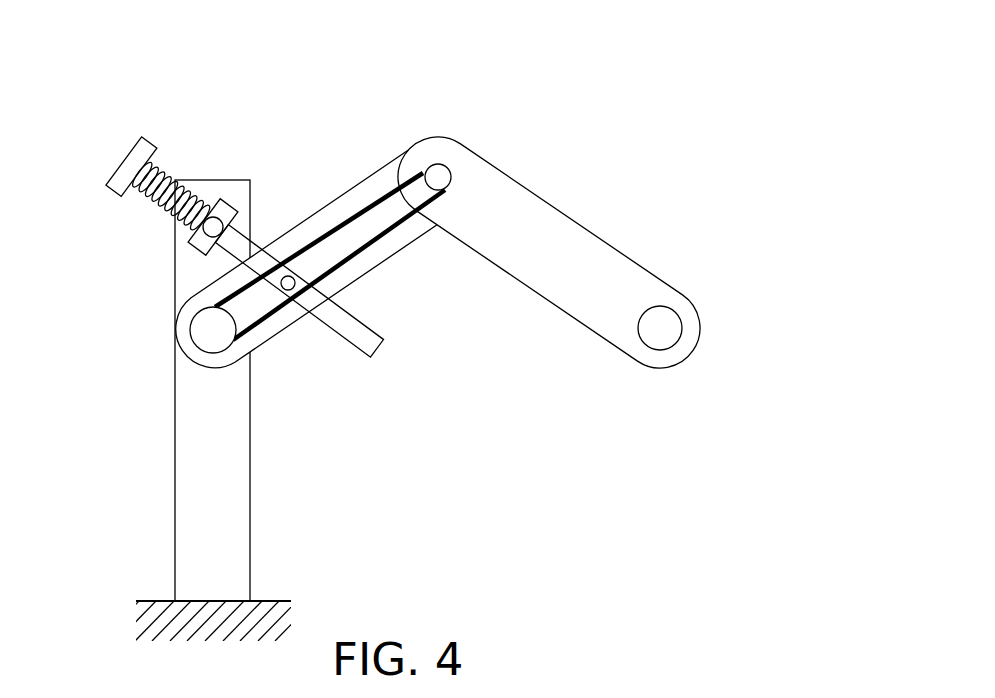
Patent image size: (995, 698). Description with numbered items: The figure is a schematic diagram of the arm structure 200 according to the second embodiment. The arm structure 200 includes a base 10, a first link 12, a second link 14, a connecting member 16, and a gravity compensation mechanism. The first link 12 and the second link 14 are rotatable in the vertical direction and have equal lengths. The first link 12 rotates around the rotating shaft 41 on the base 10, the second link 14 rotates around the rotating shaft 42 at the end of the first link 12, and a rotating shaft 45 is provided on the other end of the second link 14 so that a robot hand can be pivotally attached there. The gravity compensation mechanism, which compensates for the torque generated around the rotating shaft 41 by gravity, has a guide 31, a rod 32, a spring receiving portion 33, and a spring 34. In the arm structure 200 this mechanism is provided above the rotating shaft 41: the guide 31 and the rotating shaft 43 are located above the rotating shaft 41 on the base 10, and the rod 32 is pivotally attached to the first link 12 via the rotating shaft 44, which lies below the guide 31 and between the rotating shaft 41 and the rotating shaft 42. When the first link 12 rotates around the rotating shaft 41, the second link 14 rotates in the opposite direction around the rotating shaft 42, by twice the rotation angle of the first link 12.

The arm structure 200 is at (631, 85).
The base 10 is at (185, 494).
The first link 12 is at (347, 196).
The second link 14 is at (547, 231).
The connecting member 16 is at (352, 262).
The guide 31 is at (197, 247).
The rod 32 is at (232, 248).
The spring receiving portion 33 is at (133, 164).
The spring 34 is at (165, 161).
The rotating shaft 41 is at (218, 336).
The rotating shaft 42 is at (437, 172).
The rotating shaft 43 is at (215, 225).
The rotating shaft 44 is at (291, 288).
The rotating shaft 45 is at (660, 322).